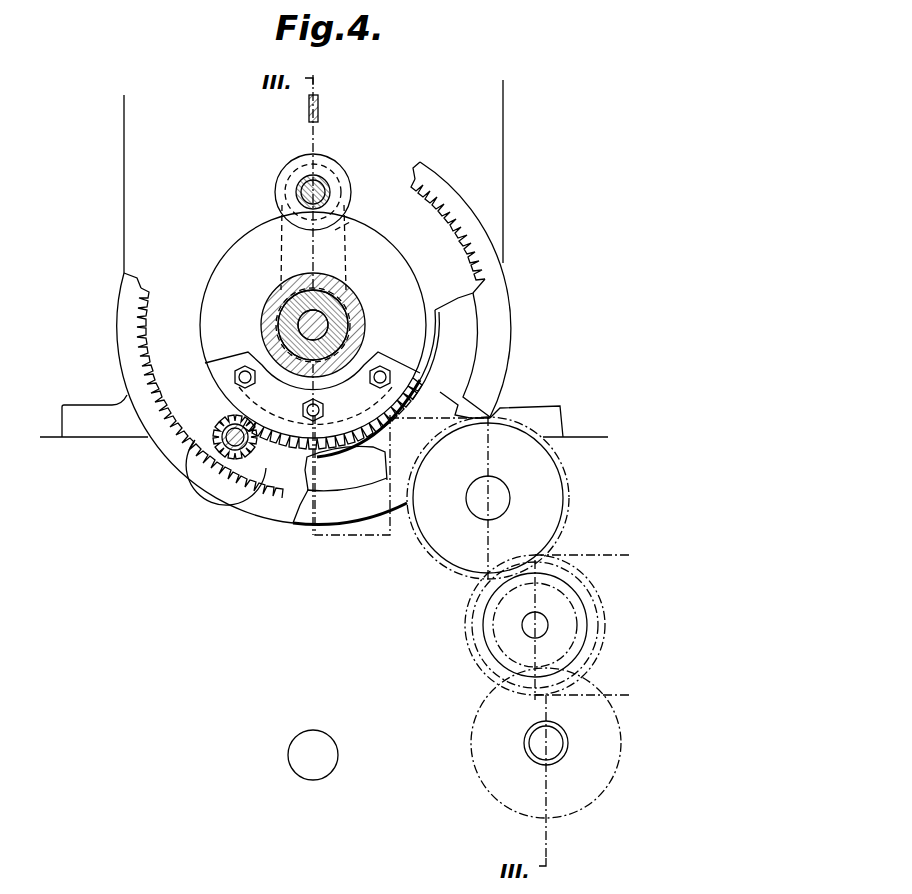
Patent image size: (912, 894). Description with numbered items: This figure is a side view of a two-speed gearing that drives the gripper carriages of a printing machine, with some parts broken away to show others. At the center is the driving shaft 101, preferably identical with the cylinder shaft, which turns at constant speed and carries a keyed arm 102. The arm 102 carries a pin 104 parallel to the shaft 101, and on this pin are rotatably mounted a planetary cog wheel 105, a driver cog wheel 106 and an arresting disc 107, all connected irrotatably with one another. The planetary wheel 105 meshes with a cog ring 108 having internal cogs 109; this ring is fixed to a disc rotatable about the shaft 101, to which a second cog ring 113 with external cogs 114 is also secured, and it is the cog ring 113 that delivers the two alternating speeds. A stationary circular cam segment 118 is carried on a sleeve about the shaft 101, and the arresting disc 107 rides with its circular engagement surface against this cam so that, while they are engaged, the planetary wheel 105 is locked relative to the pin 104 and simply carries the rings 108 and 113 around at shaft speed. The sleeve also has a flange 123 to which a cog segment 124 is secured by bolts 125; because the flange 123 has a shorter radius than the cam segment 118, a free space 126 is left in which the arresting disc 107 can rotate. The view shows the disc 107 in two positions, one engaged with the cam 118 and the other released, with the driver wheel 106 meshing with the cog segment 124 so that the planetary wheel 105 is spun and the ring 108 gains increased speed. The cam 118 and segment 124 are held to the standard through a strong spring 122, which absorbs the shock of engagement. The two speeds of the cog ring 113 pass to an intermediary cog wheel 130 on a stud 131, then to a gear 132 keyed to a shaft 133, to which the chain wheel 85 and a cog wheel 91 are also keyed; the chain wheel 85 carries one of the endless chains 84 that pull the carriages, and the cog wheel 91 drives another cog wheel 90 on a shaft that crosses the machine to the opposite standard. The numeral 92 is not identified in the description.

The endless chain 84 is at (603, 555).
The chain wheel 85 is at (470, 600).
The cog wheel 90 is at (478, 735).
The cog wheel 91 is at (495, 643).
The shaft 92 is at (538, 752).
The driving shaft 101 is at (332, 322).
The arm 102 is at (355, 238).
The pin 104 is at (330, 196).
The planetary cog wheel 105 is at (235, 468).
The driver cog wheel 106 is at (330, 424).
The arresting disc 107 is at (338, 178).
The cog ring 108 is at (443, 188).
The internal cogs 109 is at (147, 345).
The cog ring 113 is at (437, 404).
The external cogs 114 is at (455, 415).
The circular cam segment 118 is at (240, 258).
The spring 122 is at (320, 108).
The flange 123 is at (350, 475).
The cog segment 124 is at (228, 356).
The bolt 125 is at (334, 407).
The free space 126 is at (212, 364).
The intermediary cog wheel 130 is at (538, 455).
The stud 131 is at (505, 498).
The gear 132 is at (508, 613).
The shaft 133 is at (530, 632).